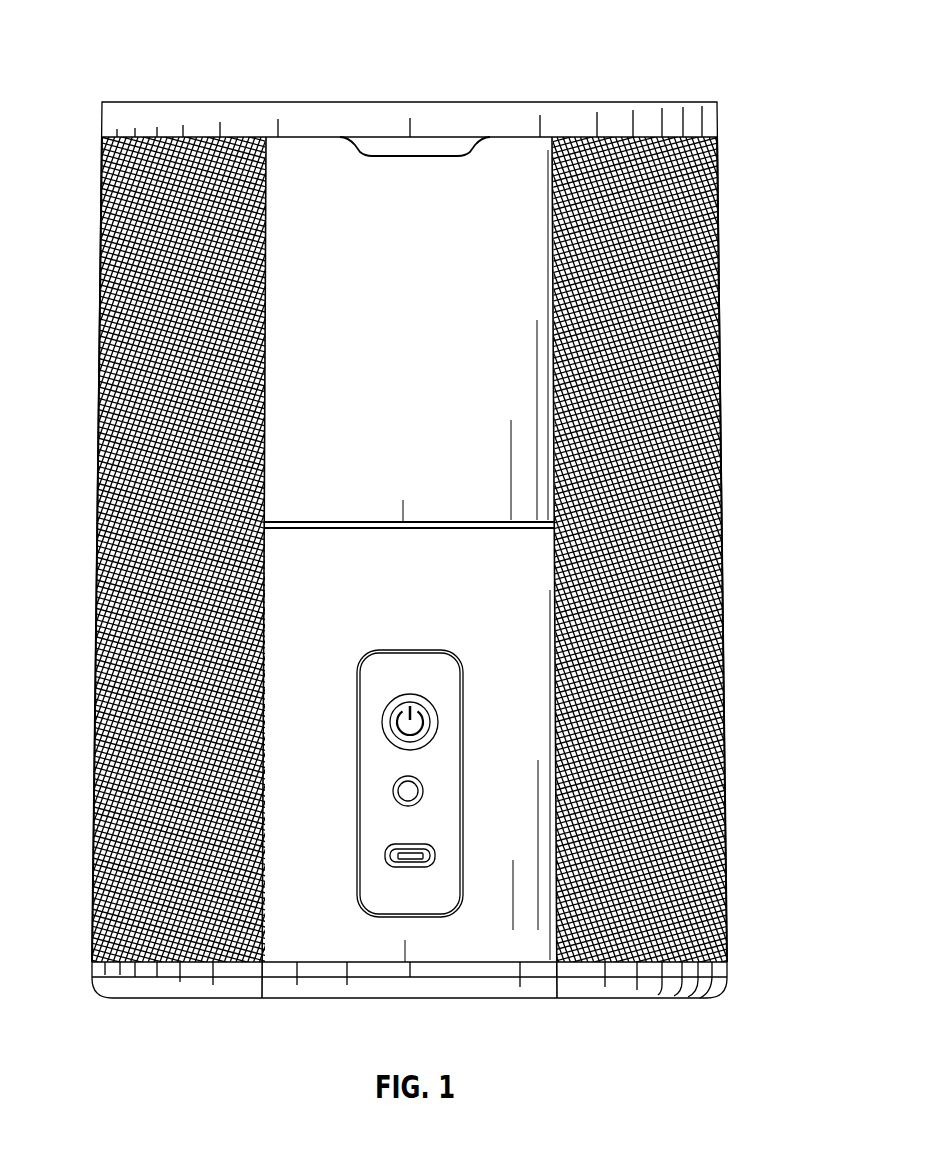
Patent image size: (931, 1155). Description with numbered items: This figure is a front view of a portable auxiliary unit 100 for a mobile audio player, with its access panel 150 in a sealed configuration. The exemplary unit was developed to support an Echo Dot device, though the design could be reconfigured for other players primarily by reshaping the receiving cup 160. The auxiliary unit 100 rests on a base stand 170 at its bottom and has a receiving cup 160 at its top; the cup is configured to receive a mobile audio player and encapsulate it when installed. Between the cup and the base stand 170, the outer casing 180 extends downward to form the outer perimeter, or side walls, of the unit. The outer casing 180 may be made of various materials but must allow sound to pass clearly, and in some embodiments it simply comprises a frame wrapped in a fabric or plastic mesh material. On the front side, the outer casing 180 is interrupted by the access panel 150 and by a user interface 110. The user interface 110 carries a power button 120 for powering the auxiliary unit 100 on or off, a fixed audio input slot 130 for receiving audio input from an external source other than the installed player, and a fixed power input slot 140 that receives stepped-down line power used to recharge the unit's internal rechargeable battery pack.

The portable auxiliary unit 100 is at (662, 40).
The user interface 110 is at (357, 766).
The power button 120 is at (438, 722).
The fixed audio input slot 130 is at (423, 791).
The fixed power input slot 140 is at (435, 856).
The access panel 150 is at (441, 302).
The receiving cup 160 is at (131, 102).
The base stand 170 is at (665, 999).
The outer casing 180 is at (720, 345).